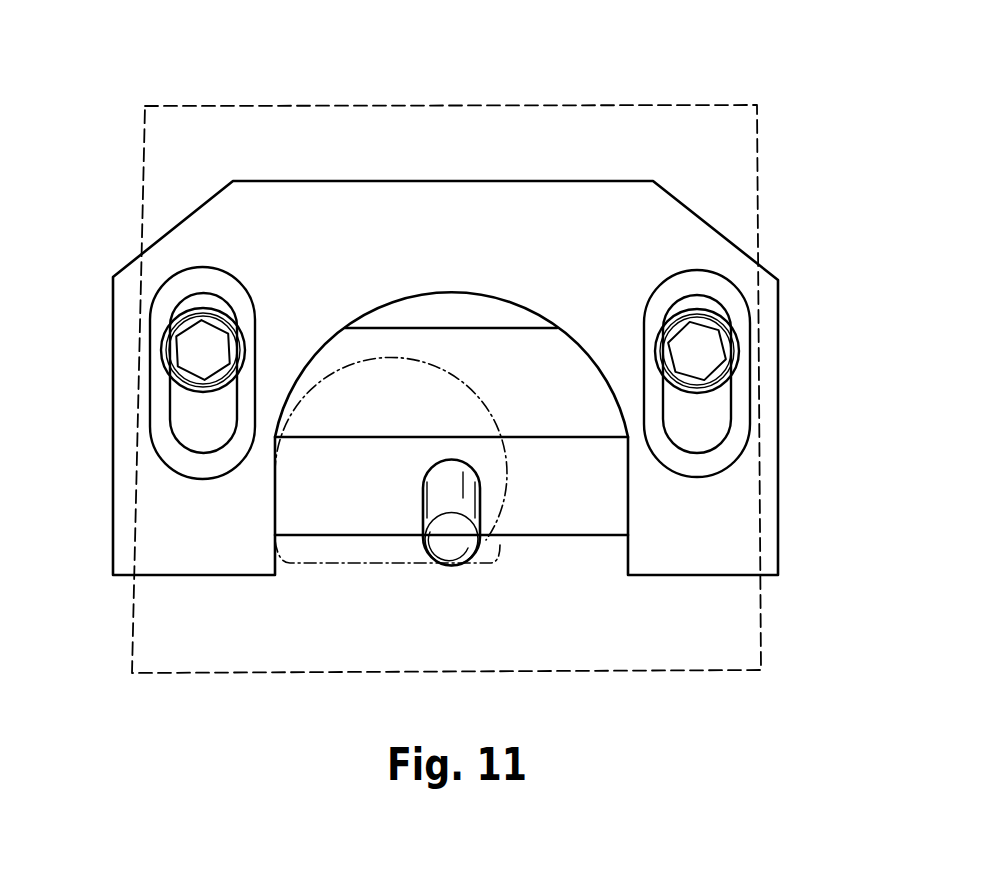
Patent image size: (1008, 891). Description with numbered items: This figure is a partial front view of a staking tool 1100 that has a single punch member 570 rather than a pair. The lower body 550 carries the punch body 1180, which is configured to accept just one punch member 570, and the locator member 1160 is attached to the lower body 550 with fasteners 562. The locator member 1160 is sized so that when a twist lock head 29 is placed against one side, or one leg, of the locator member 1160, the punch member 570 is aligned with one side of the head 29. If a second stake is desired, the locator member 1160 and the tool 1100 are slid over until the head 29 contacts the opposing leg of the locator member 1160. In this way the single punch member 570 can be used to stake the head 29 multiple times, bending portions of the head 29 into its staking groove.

The staking tool 1100 is at (782, 100).
The lower body 550 is at (715, 137).
The locator member 1160 is at (477, 251).
The punch body 1180 is at (575, 408).
The fasteners 562 is at (163, 351).
The punch member 570 is at (463, 543).
The head 29 is at (318, 565).